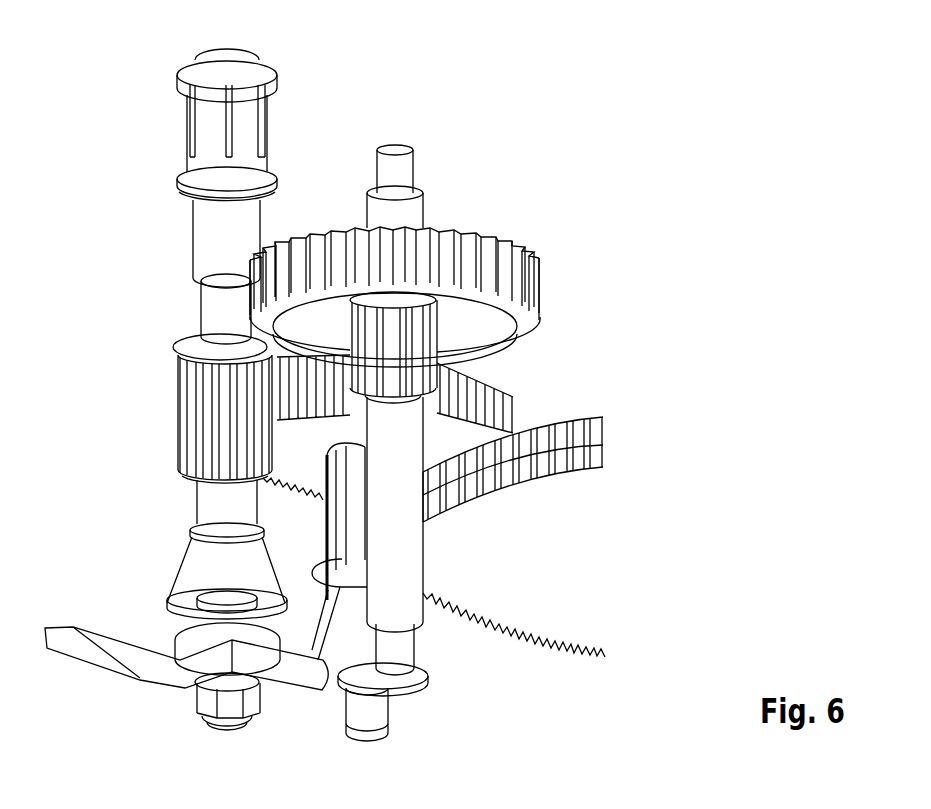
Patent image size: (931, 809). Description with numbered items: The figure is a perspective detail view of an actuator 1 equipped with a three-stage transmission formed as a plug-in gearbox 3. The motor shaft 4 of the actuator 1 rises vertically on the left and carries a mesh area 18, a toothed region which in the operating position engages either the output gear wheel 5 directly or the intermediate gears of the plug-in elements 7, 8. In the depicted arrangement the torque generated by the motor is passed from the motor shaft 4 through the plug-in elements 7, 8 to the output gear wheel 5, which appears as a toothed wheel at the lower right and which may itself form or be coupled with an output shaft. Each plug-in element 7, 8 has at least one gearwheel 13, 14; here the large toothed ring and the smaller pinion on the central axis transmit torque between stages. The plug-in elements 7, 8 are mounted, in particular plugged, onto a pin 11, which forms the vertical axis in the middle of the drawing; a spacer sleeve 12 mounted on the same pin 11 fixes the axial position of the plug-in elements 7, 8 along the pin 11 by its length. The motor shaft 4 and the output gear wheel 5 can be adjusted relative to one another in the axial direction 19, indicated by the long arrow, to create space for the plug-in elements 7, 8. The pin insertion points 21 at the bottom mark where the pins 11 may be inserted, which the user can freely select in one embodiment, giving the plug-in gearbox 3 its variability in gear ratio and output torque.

The actuator 1 is at (792, 170).
The plug-in gearbox 3 is at (690, 350).
The motor shaft 4 is at (218, 301).
The output gear wheel 5 is at (538, 573).
The plug-in element 7 is at (485, 358).
The plug-in element 8 is at (446, 212).
The pin 11 is at (393, 150).
The spacer sleeve 12 is at (405, 535).
The gearwheel 13 is at (320, 261).
The gearwheel 14 is at (377, 332).
The mesh area 18 is at (165, 352).
The axial direction 19 is at (672, 638).
The pin insertion point 21 is at (332, 727).